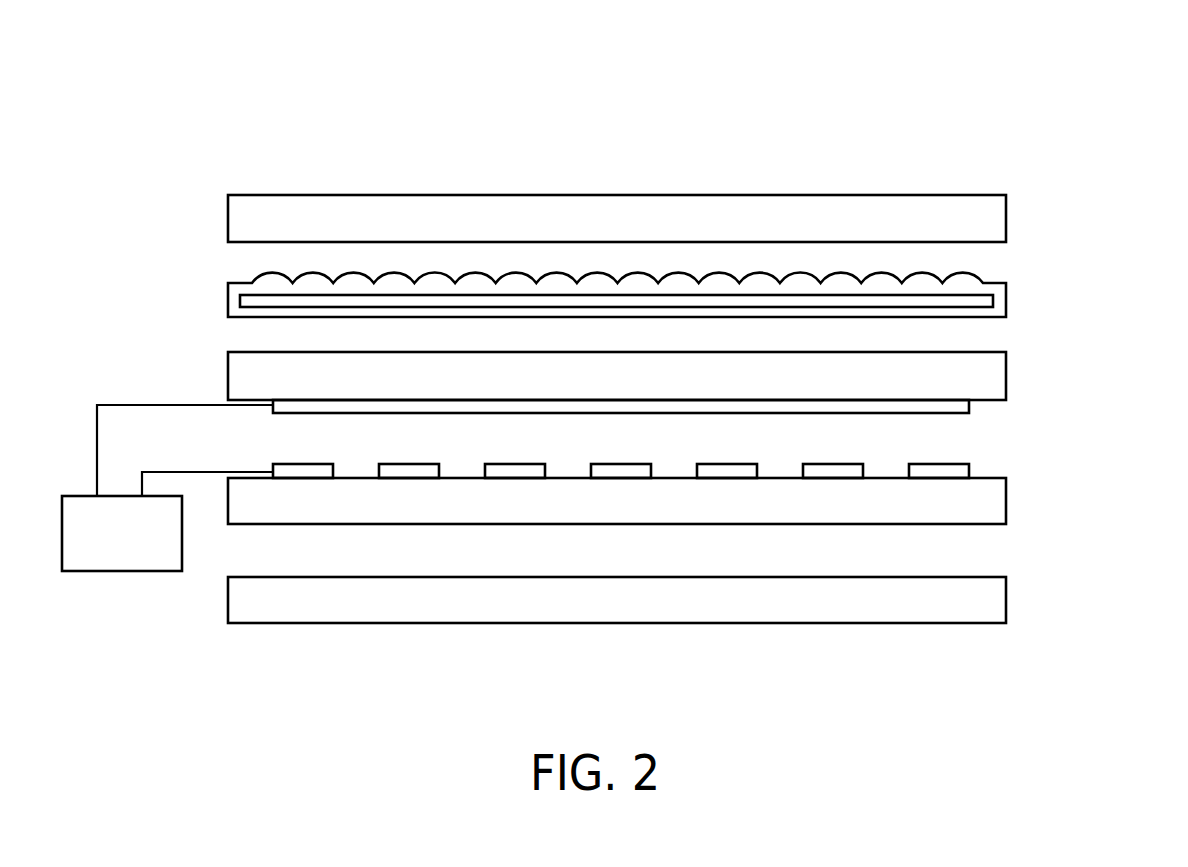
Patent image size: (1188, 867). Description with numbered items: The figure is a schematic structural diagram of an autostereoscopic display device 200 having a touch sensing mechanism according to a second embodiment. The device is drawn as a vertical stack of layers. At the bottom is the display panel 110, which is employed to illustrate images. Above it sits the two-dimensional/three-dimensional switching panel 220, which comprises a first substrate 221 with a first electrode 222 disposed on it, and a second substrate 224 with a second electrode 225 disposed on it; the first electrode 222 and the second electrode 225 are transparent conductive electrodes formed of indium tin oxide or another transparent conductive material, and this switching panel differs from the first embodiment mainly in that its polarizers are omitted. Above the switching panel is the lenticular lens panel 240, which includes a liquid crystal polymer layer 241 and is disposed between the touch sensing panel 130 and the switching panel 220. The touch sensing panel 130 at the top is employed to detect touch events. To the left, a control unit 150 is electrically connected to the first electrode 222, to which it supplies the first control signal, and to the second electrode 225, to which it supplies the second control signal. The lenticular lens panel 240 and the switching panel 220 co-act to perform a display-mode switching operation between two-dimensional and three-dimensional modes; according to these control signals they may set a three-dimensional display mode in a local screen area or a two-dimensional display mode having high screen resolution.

The autostereoscopic display device 200 is at (953, 87).
The touch sensing panel 130 is at (1006, 215).
The lenticular lens panel 240 is at (1006, 300).
The liquid crystal polymer (LCP) layer 241 is at (248, 301).
The 2D/3D switching panel 220 is at (704, 434).
The first substrate 221 is at (1006, 372).
The first electrode 222 is at (969, 405).
The second electrode 225 is at (969, 468).
The second substrate 224 is at (662, 501).
The display panel 110 is at (1006, 599).
The control unit 150 is at (142, 548).